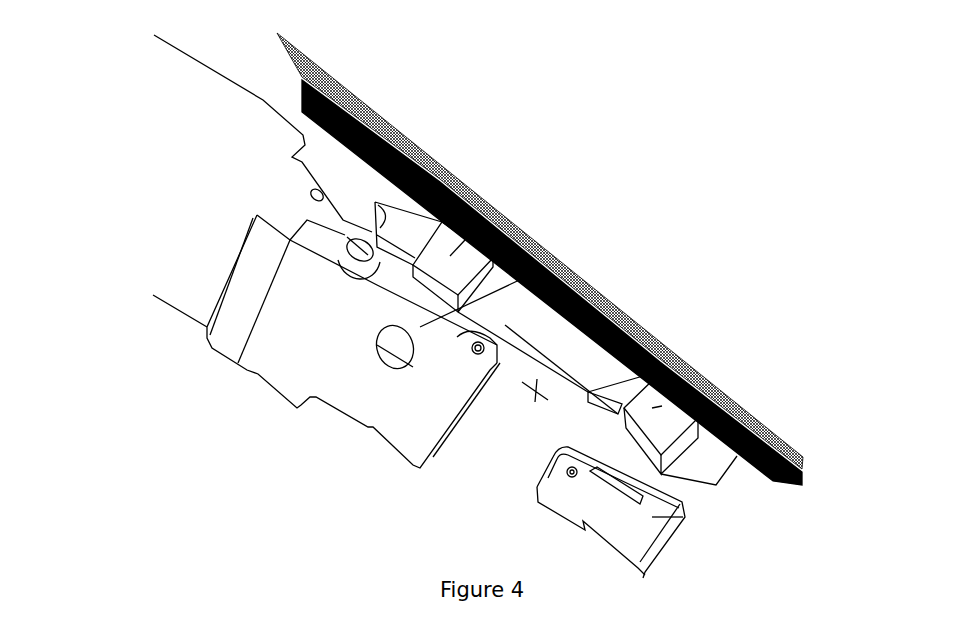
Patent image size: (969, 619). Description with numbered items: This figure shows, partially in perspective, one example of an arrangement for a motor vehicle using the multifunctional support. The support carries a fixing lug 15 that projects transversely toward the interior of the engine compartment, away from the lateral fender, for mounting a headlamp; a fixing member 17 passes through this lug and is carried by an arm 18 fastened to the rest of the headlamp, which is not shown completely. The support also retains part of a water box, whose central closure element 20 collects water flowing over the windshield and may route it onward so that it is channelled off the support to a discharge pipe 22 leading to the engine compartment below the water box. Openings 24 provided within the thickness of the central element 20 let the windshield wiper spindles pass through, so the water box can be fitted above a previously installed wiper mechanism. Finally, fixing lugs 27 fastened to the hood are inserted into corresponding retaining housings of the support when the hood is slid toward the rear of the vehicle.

The discharge pipe 22 is at (350, 243).
The central closure element 20 is at (300, 310).
The openings 24 is at (567, 265).
The fixing member 17 is at (548, 454).
The fixing lug 27 is at (490, 215).
The fixing lug 15 is at (538, 502).
The arm 18 is at (652, 517).